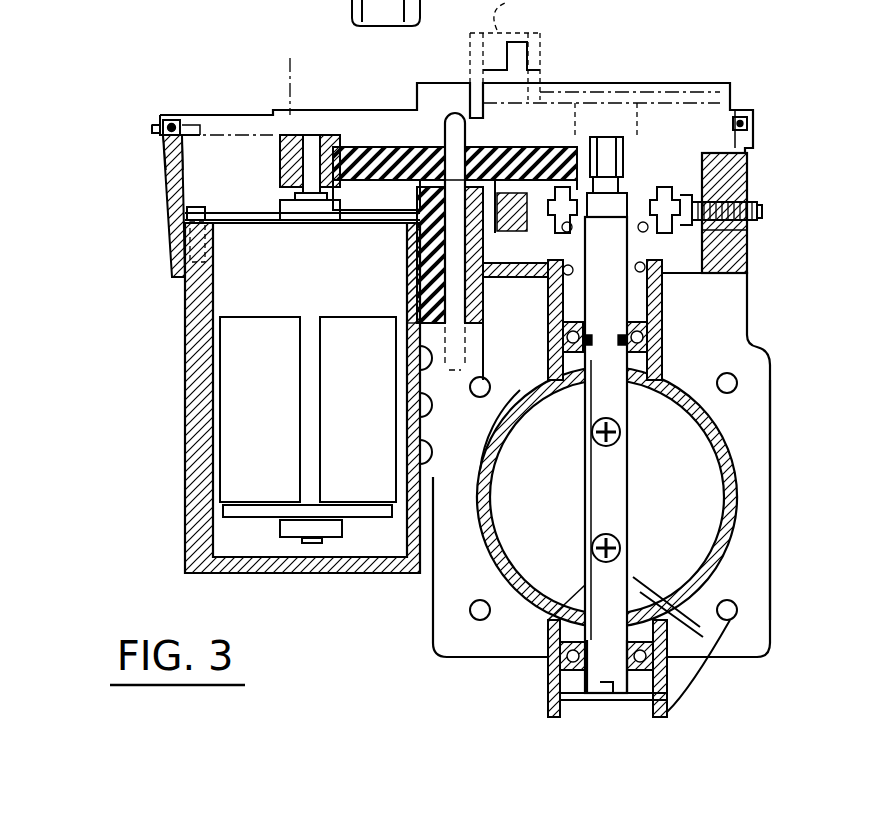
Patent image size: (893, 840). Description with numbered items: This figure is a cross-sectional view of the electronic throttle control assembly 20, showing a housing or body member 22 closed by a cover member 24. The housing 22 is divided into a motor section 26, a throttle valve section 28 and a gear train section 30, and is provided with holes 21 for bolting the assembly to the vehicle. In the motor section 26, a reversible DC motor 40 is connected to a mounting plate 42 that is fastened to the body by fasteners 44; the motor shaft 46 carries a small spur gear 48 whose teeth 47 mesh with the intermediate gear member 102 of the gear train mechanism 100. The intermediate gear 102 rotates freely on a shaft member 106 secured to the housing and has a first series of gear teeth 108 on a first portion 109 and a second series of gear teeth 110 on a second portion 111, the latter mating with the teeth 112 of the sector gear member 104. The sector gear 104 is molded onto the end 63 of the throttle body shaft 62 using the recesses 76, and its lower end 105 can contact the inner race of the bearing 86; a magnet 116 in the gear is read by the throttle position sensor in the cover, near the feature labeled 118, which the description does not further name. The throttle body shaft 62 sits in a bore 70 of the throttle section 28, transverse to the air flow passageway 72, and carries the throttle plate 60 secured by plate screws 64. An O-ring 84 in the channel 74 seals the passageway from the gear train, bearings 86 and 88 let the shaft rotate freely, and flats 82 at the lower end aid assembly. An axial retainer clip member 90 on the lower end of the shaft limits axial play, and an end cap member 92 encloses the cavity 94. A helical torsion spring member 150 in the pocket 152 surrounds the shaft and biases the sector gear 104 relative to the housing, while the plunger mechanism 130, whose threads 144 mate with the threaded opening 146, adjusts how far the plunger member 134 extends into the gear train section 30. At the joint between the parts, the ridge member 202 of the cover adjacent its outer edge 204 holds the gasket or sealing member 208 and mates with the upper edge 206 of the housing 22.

The electronic throttle control assembly 20 is at (120, 372).
The holes 21 is at (470, 387).
The housing or body member 22 is at (749, 320).
The cover member 24 is at (282, 74).
The motor section 26 is at (185, 455).
The throttle valve section 28 is at (760, 430).
The gear train section 30 is at (168, 200).
The motor 40 is at (272, 424).
The mounting plate 42 is at (195, 237).
The fasteners 44 is at (192, 215).
The motor shaft 46 is at (310, 140).
The gear teeth 47 is at (340, 185).
The spur gear 48 is at (280, 150).
The throttle valve or plate 60 is at (552, 500).
The throttle body shaft 62 is at (590, 462).
The end of throttle body shaft 63 is at (623, 173).
The plate screws 64 is at (618, 535).
The bore or channel 70 is at (590, 613).
The air flow passageway 72 is at (513, 433).
The O-ring channel or groove 74 is at (604, 333).
The flats or recesses 76 is at (617, 157).
The flats or recesses 82 is at (605, 692).
The O-ring 84 is at (650, 343).
The bearing 86 is at (563, 338).
The bearing 88 is at (560, 655).
The axial retainer clip member 90 is at (668, 683).
The end cap member or plug member 92 is at (663, 720).
The cavity 94 is at (560, 680).
The gear train mechanism 100 is at (540, 128).
The intermediate gear member 102 is at (400, 182).
The sector gear member 104 is at (735, 200).
The lower end of sector gear 105 is at (667, 275).
The shaft member 106 is at (423, 230).
The first series of gear teeth 108 is at (337, 193).
The first portion 109 is at (368, 150).
The second series of gear teeth 110 is at (420, 257).
The second portion 111 is at (393, 277).
The gear teeth 112 is at (505, 215).
The magnet 116 is at (612, 135).
The cover boss 118 is at (637, 133).
The plunger mechanism 130 is at (760, 207).
The plunger member 134 is at (747, 240).
The thread members 144 is at (760, 217).
The opening 146 is at (722, 207).
The helical torsion spring member 150 is at (563, 280).
The recess or pocket 152 is at (658, 308).
The ridge member 202 is at (190, 130).
The outer edge 204 is at (152, 120).
The upper edge 206 is at (163, 145).
The gasket or sealing member 208 is at (171, 118).